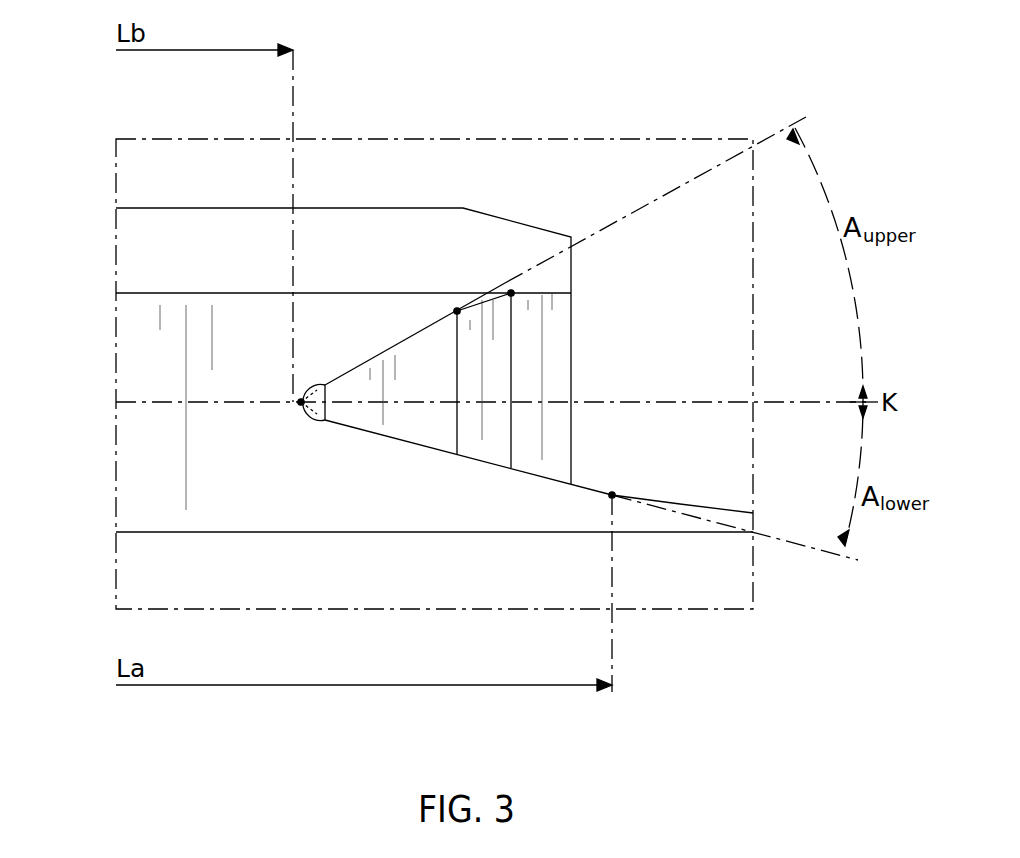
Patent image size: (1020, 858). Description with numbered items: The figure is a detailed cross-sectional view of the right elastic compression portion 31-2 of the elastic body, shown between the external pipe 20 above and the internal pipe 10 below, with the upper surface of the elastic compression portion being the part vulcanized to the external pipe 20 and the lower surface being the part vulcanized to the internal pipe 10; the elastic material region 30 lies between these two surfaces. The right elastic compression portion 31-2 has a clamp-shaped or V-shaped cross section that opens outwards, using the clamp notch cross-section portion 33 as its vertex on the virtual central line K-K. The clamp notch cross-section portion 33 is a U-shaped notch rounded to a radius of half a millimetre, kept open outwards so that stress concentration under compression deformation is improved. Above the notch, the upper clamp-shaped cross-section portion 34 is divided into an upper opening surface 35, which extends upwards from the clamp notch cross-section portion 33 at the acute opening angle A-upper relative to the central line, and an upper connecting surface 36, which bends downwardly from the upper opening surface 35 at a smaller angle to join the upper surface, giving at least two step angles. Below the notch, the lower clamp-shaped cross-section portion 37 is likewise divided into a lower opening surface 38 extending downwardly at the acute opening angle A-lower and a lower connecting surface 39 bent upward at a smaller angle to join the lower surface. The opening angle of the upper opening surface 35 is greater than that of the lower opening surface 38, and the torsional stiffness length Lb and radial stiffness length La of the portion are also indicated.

The internal pipe 10 is at (137, 567).
The external pipe 20 is at (137, 248).
The blade portion 30 is at (137, 336).
The right elastic compression portion 31-2 is at (292, 382).
The clamp notch cross-section portion 33 is at (297, 414).
The upper clamp-shaped cross-section portion 34 is at (565, 292).
The upper opening surface 35 is at (395, 347).
The upper connecting surface 36 is at (468, 302).
The lower clamp-shaped cross-section portion 37 is at (720, 636).
The lower opening surface 38 is at (585, 492).
The lower connecting surface 39 is at (720, 510).